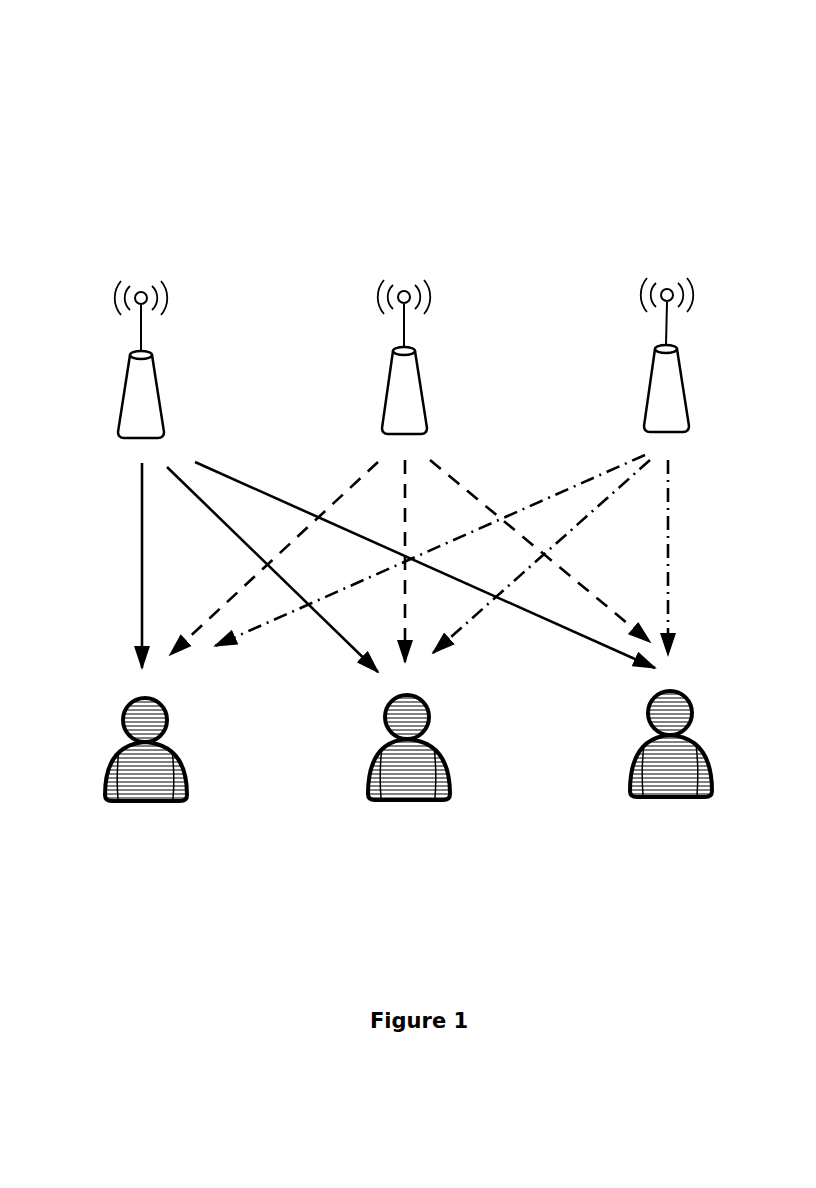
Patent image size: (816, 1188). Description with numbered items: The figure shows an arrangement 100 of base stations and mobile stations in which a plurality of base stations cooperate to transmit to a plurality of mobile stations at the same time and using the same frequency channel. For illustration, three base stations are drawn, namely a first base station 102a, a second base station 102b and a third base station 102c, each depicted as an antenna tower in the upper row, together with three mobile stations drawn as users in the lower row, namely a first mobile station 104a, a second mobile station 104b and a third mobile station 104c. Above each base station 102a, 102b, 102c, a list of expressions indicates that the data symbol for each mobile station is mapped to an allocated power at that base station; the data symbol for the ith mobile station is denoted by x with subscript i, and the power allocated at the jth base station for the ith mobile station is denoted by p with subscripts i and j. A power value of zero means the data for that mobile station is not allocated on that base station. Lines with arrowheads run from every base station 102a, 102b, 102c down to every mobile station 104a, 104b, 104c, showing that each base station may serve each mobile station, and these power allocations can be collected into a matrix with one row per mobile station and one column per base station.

The arrangement 100 is at (662, 88).
The first base station 102a is at (125, 392).
The second base station 102b is at (388, 387).
The third base station 102c is at (650, 379).
The first mobile station 104a is at (108, 773).
The second mobile station 104b is at (367, 762).
The third mobile station 104c is at (630, 762).